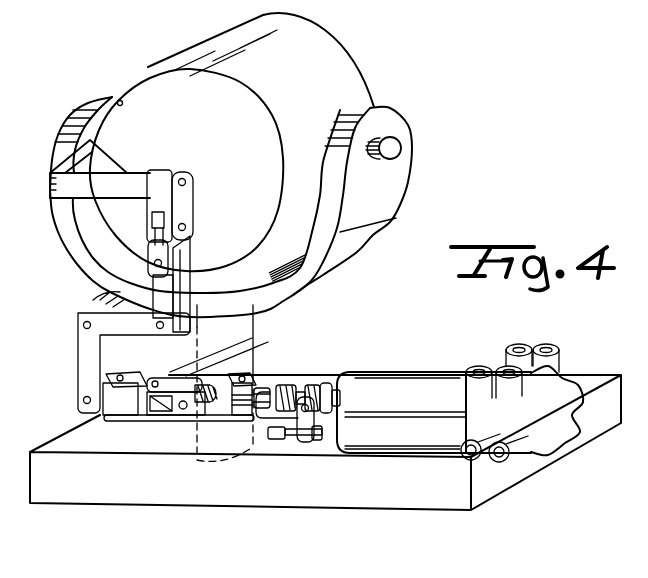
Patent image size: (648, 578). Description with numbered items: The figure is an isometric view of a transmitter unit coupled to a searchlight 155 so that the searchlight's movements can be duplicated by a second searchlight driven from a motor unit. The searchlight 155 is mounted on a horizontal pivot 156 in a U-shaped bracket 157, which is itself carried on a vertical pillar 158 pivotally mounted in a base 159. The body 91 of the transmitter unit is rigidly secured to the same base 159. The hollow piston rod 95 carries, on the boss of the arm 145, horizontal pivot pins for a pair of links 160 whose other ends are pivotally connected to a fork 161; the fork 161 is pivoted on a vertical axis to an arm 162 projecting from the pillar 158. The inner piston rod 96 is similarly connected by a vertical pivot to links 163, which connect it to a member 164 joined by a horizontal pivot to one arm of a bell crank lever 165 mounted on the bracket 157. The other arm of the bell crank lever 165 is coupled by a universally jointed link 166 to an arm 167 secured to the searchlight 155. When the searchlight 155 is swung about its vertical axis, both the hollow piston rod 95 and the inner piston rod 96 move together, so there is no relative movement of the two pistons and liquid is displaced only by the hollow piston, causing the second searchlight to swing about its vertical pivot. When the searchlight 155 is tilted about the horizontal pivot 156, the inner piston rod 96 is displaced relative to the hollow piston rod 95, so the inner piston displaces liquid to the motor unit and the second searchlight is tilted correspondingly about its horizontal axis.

The searchlight 155 is at (344, 72).
The horizontal pivot 156 is at (392, 148).
The U-shaped bracket 157 is at (387, 206).
The vertical pillar 158 is at (250, 318).
The base 159 is at (132, 490).
The links 160 is at (328, 386).
The fork 161 is at (170, 418).
The arm 162 is at (256, 335).
The links 163 is at (140, 422).
The member 164 is at (102, 419).
The bell crank lever 165 is at (80, 338).
The universally jointed link 166 is at (191, 247).
The arm 167 is at (124, 173).
The body 91 is at (410, 388).
The hollow piston rod 95 is at (341, 398).
The inner piston rod 96 is at (268, 388).
The arm 145 is at (330, 432).